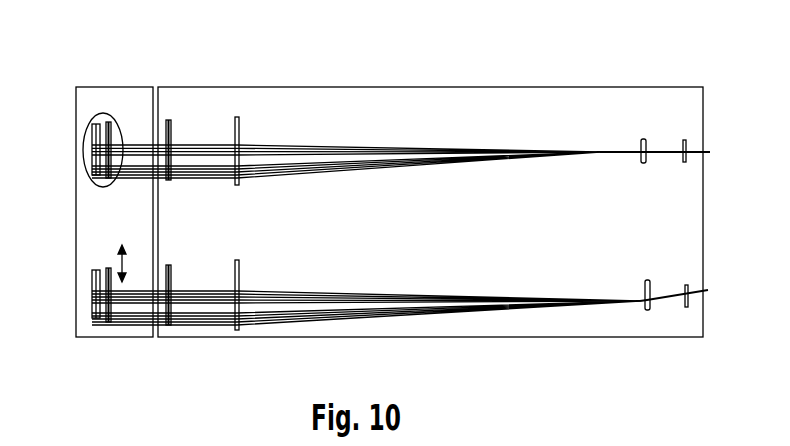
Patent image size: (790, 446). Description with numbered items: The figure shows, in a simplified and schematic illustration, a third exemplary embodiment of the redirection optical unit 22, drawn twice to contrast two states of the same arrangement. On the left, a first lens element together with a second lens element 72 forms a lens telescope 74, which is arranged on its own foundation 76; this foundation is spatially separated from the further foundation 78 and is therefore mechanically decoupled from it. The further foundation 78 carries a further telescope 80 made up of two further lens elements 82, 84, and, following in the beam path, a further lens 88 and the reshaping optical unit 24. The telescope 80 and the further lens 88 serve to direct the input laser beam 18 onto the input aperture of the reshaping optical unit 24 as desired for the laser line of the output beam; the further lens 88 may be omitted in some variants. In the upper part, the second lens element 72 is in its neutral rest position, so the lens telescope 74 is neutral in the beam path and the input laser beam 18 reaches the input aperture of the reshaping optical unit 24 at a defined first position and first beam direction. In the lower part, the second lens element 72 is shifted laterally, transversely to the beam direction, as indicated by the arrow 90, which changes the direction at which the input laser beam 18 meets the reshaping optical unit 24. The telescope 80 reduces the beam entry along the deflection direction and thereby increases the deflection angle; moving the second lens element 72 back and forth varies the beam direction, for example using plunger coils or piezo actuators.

The input laser beam 18 is at (663, 157).
The redirection optical unit 22 is at (103, 343).
The reshaping optical unit 24 is at (684, 139).
The second lens element 72 is at (108, 121).
The lens telescope 74 is at (84, 160).
The foundation 76 is at (88, 113).
The further foundation 78 is at (395, 87).
The further telescope 80 is at (203, 136).
The further lens element 82 is at (168, 119).
The further lens element 84 is at (237, 116).
The further lens 88 is at (643, 138).
The arrow 90 is at (126, 268).